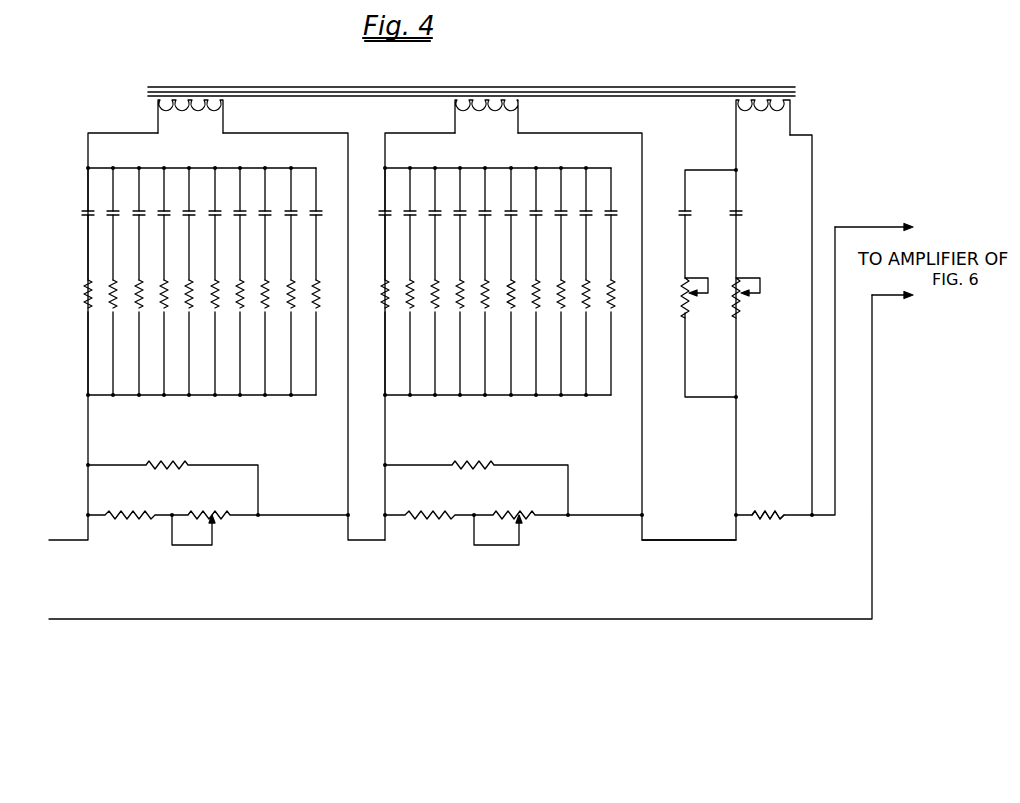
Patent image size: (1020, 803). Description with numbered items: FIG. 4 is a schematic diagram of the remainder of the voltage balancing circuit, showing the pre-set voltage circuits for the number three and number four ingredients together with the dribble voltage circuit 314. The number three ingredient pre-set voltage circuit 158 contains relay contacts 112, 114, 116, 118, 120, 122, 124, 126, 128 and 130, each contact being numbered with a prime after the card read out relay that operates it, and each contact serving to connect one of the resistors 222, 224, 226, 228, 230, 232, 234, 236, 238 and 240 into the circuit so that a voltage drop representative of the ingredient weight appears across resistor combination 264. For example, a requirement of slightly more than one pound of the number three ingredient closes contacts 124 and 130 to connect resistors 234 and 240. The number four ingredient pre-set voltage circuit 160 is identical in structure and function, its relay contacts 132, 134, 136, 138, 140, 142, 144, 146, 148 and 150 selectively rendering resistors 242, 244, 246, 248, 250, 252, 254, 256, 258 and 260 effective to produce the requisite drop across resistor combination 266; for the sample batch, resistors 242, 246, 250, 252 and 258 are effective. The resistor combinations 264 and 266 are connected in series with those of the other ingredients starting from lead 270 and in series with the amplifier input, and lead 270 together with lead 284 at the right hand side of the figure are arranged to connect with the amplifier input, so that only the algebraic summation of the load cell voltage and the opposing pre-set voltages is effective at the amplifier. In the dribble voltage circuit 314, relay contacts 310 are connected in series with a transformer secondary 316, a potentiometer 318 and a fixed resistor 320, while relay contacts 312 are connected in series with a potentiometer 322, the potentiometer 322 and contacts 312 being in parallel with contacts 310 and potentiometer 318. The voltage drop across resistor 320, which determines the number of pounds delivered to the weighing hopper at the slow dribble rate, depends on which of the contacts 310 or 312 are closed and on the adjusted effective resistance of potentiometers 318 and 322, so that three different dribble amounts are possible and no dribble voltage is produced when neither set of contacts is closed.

The relay contacts 112 is at (85, 220).
The relay contacts 114 is at (110, 220).
The relay contacts 116 is at (136, 220).
The relay contacts 118 is at (161, 220).
The relay contacts 120 is at (186, 220).
The relay contacts 122 is at (212, 220).
The relay contacts 124 is at (237, 220).
The relay contacts 126 is at (262, 220).
The relay contacts 128 is at (288, 220).
The relay contacts 130 is at (317, 219).
The relay contacts 132 is at (382, 220).
The relay contacts 134 is at (407, 220).
The relay contacts 136 is at (432, 220).
The relay contacts 138 is at (457, 220).
The relay contacts 140 is at (482, 220).
The relay contacts 142 is at (508, 220).
The relay contacts 144 is at (533, 220).
The relay contacts 146 is at (558, 220).
The relay contacts 148 is at (583, 220).
The relay contacts 150 is at (608, 220).
The resistor 222 is at (85, 305).
The resistor 224 is at (110, 305).
The resistor 226 is at (136, 305).
The resistor 228 is at (161, 305).
The resistor 230 is at (186, 305).
The resistor 232 is at (212, 305).
The resistor 234 is at (237, 305).
The resistor 236 is at (262, 305).
The resistor 238 is at (288, 305).
The resistor 240 is at (313, 305).
The resistor 242 is at (382, 305).
The resistor 244 is at (407, 305).
The resistor 246 is at (432, 305).
The resistor 248 is at (457, 305).
The resistor 250 is at (482, 305).
The resistor 252 is at (508, 305).
The resistor 254 is at (533, 305).
The resistor 256 is at (558, 305).
The resistor 258 is at (583, 305).
The resistor 260 is at (608, 305).
The resistor combination 264 is at (160, 522).
The number three ingredient pre-set voltage circuit 158 is at (243, 524).
The resistor combination 266 is at (447, 522).
The number four ingredient pre-set voltage circuit 160 is at (587, 523).
The transformer secondary 316 is at (753, 113).
The dribble voltage circuit 314 is at (820, 195).
The lead 284 is at (873, 226).
The relay contacts 310 is at (686, 213).
The relay contacts 312 is at (739, 216).
The potentiometer 318 is at (684, 305).
The potentiometer 322 is at (743, 302).
The fixed resistor 320 is at (771, 519).
The lead 270 is at (681, 619).